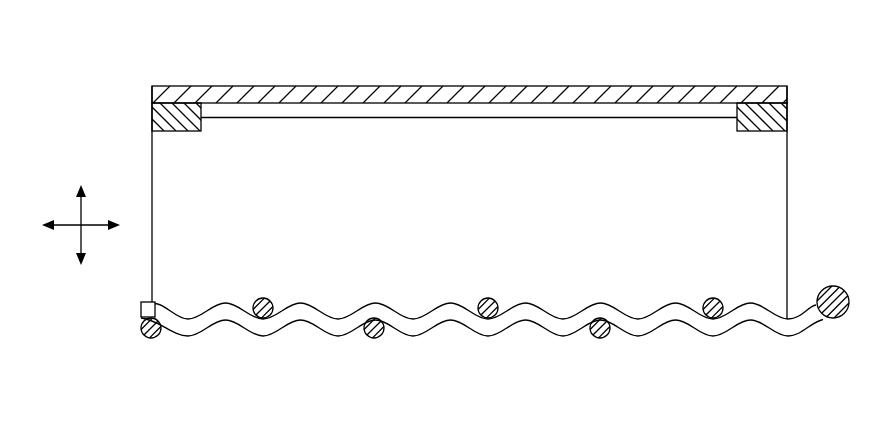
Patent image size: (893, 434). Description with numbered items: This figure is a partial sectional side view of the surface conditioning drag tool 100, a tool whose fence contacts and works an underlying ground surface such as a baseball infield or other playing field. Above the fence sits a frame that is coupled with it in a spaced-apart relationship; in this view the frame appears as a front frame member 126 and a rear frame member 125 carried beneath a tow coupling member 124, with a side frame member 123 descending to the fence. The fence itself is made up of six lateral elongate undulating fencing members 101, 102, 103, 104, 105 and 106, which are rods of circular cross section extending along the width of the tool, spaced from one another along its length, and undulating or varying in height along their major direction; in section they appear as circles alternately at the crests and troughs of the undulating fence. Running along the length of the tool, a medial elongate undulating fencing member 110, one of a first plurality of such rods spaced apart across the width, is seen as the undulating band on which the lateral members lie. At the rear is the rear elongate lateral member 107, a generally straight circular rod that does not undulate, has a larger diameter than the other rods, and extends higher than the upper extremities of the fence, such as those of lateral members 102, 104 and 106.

The surface conditioning drag tool 100 is at (783, 39).
The lateral elongate undulating fencing member 101 is at (148, 339).
The lateral elongate undulating fencing member 102 is at (258, 297).
The lateral elongate undulating fencing member 103 is at (372, 339).
The lateral elongate undulating fencing member 104 is at (480, 297).
The lateral elongate undulating fencing member 105 is at (600, 339).
The lateral elongate undulating fencing member 106 is at (705, 298).
The rear elongate lateral member 107 is at (831, 287).
The medial elongate undulating fencing member 110 is at (715, 337).
The side frame member 123 is at (787, 165).
The tow coupling member 124 is at (478, 86).
The rear frame member 125 is at (787, 105).
The front frame member 126 is at (152, 105).